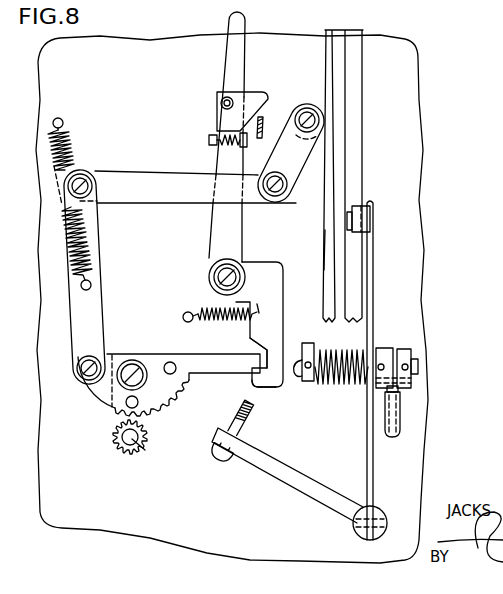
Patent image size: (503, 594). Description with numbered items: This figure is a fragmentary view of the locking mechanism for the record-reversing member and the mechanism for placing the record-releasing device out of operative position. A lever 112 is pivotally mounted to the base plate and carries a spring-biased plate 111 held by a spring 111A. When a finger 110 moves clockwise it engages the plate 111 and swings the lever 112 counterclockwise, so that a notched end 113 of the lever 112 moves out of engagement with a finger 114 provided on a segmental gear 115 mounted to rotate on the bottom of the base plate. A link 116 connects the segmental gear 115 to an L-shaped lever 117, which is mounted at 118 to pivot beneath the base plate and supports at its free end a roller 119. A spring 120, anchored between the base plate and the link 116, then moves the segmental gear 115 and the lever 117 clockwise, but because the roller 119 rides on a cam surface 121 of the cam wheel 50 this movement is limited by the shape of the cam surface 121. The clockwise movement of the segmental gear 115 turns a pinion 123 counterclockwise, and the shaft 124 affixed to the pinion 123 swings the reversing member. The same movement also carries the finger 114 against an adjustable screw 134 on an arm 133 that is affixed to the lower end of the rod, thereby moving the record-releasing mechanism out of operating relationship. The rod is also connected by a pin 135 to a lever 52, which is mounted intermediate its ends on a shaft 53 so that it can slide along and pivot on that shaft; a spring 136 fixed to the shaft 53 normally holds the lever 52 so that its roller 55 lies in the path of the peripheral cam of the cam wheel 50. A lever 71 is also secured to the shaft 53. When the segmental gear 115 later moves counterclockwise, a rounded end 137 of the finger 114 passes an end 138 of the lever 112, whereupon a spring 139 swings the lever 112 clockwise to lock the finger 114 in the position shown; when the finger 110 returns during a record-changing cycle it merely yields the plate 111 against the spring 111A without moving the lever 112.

The cam wheel 50 is at (357, 114).
The lever 52 is at (374, 320).
The shaft 53 is at (412, 367).
The roller 55 is at (370, 207).
The lever 71 is at (401, 408).
The finger 110 is at (262, 118).
The spring-biased plate 111 is at (256, 100).
The spring 111A is at (222, 148).
The lever 112 is at (230, 52).
The notched end 113 is at (270, 352).
The finger 114 is at (232, 368).
The segmental gear 115 is at (168, 412).
The link 116 is at (93, 306).
The L-shaped lever 117 is at (178, 203).
The pivot mounting 118 is at (289, 204).
The roller 119 is at (323, 128).
The spring 120 is at (74, 145).
The cam surface 121 is at (325, 250).
The pinion 123 is at (125, 455).
The shaft 124 is at (145, 450).
The arm 133 is at (285, 476).
The adjustable screw 134 is at (249, 420).
The pin 135 is at (352, 523).
The spring 136 is at (348, 382).
The rounded end 137 is at (258, 350).
The end 138 is at (256, 388).
The spring 139 is at (200, 308).